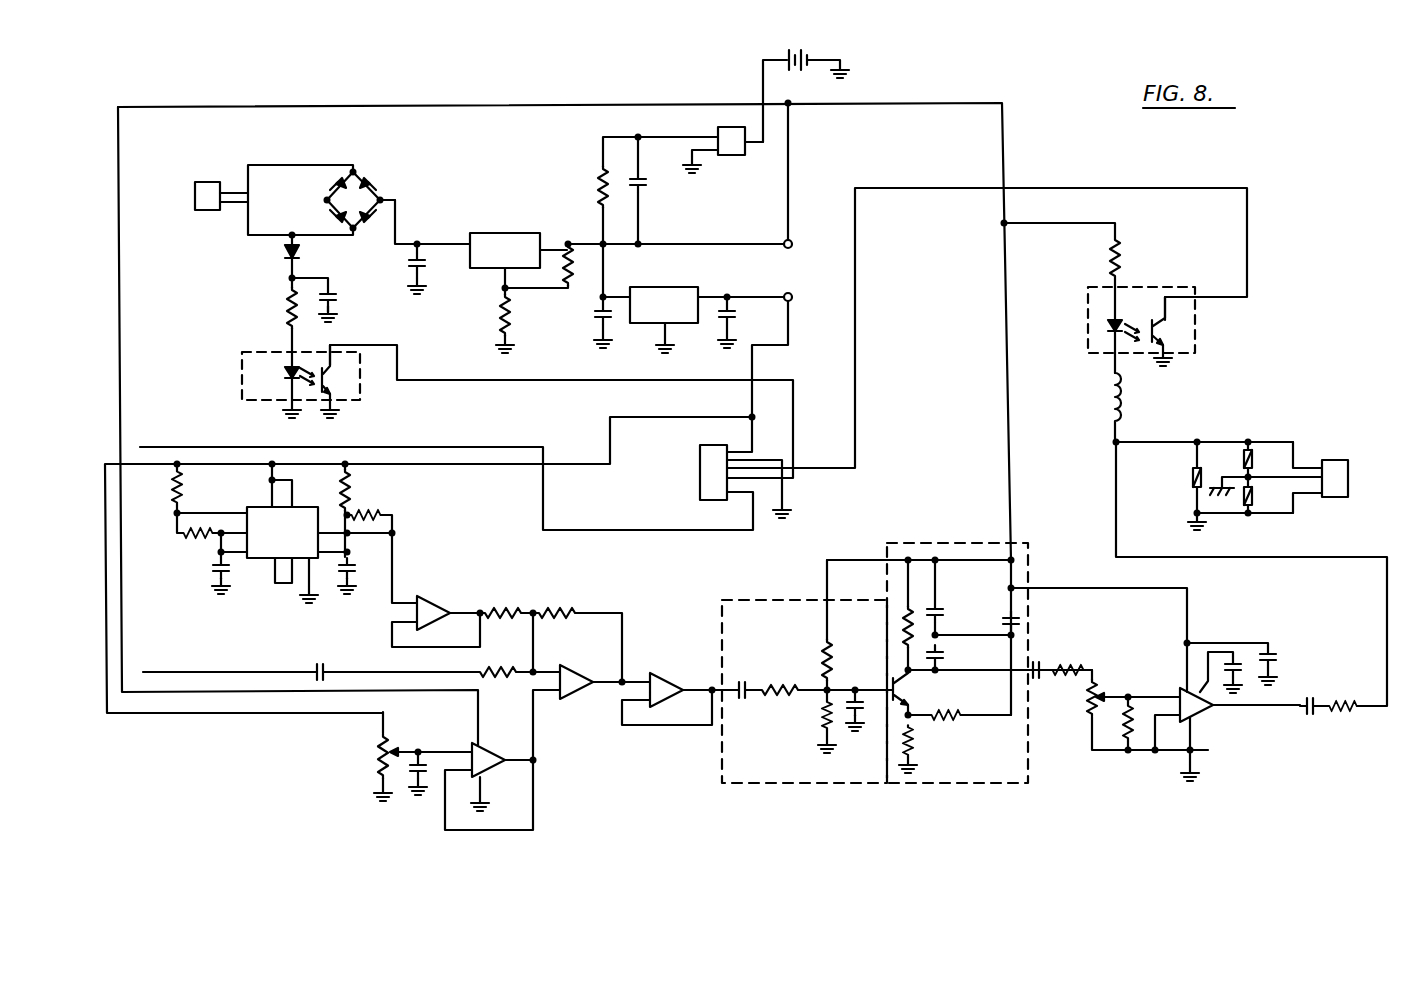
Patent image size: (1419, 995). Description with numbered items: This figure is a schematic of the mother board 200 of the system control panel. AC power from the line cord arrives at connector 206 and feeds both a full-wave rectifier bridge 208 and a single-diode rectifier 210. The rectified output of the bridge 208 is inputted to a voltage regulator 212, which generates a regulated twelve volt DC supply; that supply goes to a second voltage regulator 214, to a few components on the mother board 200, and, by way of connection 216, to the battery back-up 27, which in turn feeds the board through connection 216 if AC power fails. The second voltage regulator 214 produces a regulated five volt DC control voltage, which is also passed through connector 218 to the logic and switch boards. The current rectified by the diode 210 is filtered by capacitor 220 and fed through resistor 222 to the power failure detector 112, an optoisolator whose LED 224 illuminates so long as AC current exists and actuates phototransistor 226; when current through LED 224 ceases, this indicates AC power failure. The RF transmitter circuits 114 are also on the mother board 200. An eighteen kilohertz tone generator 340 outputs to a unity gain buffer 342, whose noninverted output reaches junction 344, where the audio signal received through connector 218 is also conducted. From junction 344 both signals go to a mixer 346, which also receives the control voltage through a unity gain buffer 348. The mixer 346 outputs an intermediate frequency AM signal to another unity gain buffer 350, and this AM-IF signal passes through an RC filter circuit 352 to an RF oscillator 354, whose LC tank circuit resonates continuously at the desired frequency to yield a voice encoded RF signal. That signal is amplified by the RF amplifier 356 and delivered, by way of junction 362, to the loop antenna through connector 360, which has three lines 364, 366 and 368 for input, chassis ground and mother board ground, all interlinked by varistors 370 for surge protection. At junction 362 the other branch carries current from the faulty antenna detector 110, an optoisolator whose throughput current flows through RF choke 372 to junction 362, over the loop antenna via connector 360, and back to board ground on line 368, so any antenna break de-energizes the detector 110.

The battery back-up 27 is at (806, 40).
The mother board 200 is at (481, 97).
The connector 206 is at (215, 212).
The full-wave rectifier bridge 208 is at (380, 177).
The single-diode rectifier 210 is at (278, 258).
The capacitor 220 is at (340, 290).
The resistor 222 is at (286, 304).
The voltage regulator 212 is at (500, 232).
The connection 216 is at (730, 157).
The voltage regulator 214 is at (688, 286).
The connector 218 is at (699, 481).
The power failure detector 112 is at (242, 353).
The LED 224 is at (280, 379).
The phototransistor 226 is at (338, 380).
The 18 kHz tone generator 340 is at (263, 559).
The unity gain buffer 342 is at (434, 597).
The junction 344 is at (540, 663).
The mixer 346 is at (563, 700).
The unity gain buffer 348 is at (472, 744).
The unity gain buffer 350 is at (680, 657).
The RC filter circuit 352 is at (782, 581).
The RF oscillator 354 is at (971, 517).
The RF transmitter circuits 114 is at (583, 697).
The RF amplifier 356 is at (1210, 711).
The faulty antenna detector 110 is at (1197, 320).
The RF choke 372 is at (1122, 404).
The junction 362 is at (1113, 445).
The varistors 370 is at (1192, 479).
The line 364 is at (1271, 442).
The line 366 is at (1257, 511).
The line 368 is at (1302, 468).
The connector 360 is at (1350, 476).